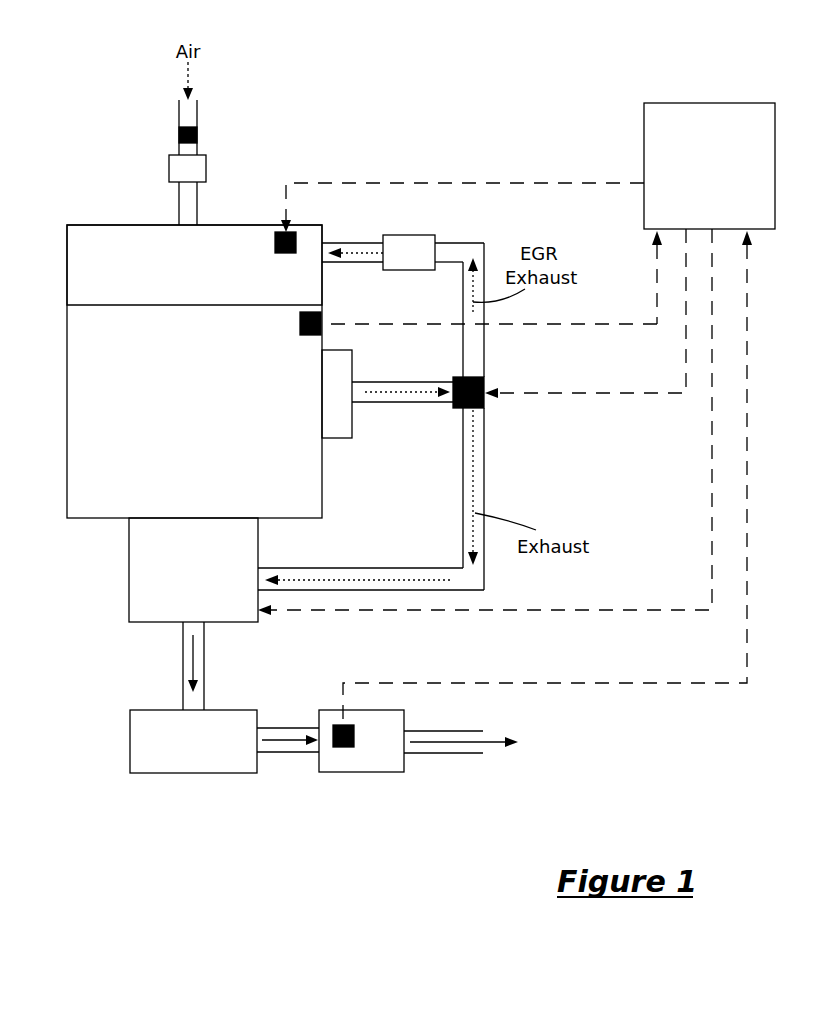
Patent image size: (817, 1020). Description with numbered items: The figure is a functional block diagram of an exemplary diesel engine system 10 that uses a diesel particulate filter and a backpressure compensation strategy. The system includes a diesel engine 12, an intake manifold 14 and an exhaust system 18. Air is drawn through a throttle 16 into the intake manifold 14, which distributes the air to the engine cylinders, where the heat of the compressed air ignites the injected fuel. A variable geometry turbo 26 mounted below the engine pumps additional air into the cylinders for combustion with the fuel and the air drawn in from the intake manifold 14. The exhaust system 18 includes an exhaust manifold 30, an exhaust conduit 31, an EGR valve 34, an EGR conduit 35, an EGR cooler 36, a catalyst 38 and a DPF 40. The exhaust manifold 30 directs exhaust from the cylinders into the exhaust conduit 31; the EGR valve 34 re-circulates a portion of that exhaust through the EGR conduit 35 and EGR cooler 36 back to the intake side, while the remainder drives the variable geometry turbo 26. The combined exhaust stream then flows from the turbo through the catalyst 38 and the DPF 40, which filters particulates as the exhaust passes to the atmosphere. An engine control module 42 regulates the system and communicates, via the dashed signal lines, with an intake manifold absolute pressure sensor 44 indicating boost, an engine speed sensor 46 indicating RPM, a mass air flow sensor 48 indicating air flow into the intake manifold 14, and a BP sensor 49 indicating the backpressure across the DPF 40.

The diesel engine system 10 is at (418, 58).
The diesel engine 12 is at (67, 447).
The intake manifold 14 is at (130, 225).
The throttle 16 is at (207, 170).
The exhaust system 18 is at (276, 660).
The variable geometry turbo 26 is at (140, 625).
The exhaust manifold 30 is at (353, 432).
The exhaust conduit 31 is at (485, 478).
The EGR valve 34 is at (453, 378).
The EGR conduit 35 is at (483, 356).
The EGR cooler 36 is at (410, 235).
The catalyst 38 is at (140, 773).
The DPF 40 is at (340, 773).
The engine control module 42 is at (708, 103).
The intake manifold absolute pressure sensor 44 is at (280, 258).
The engine speed sensor 46 is at (298, 320).
The mass air flow sensor 48 is at (177, 134).
The BP sensor 49 is at (355, 737).